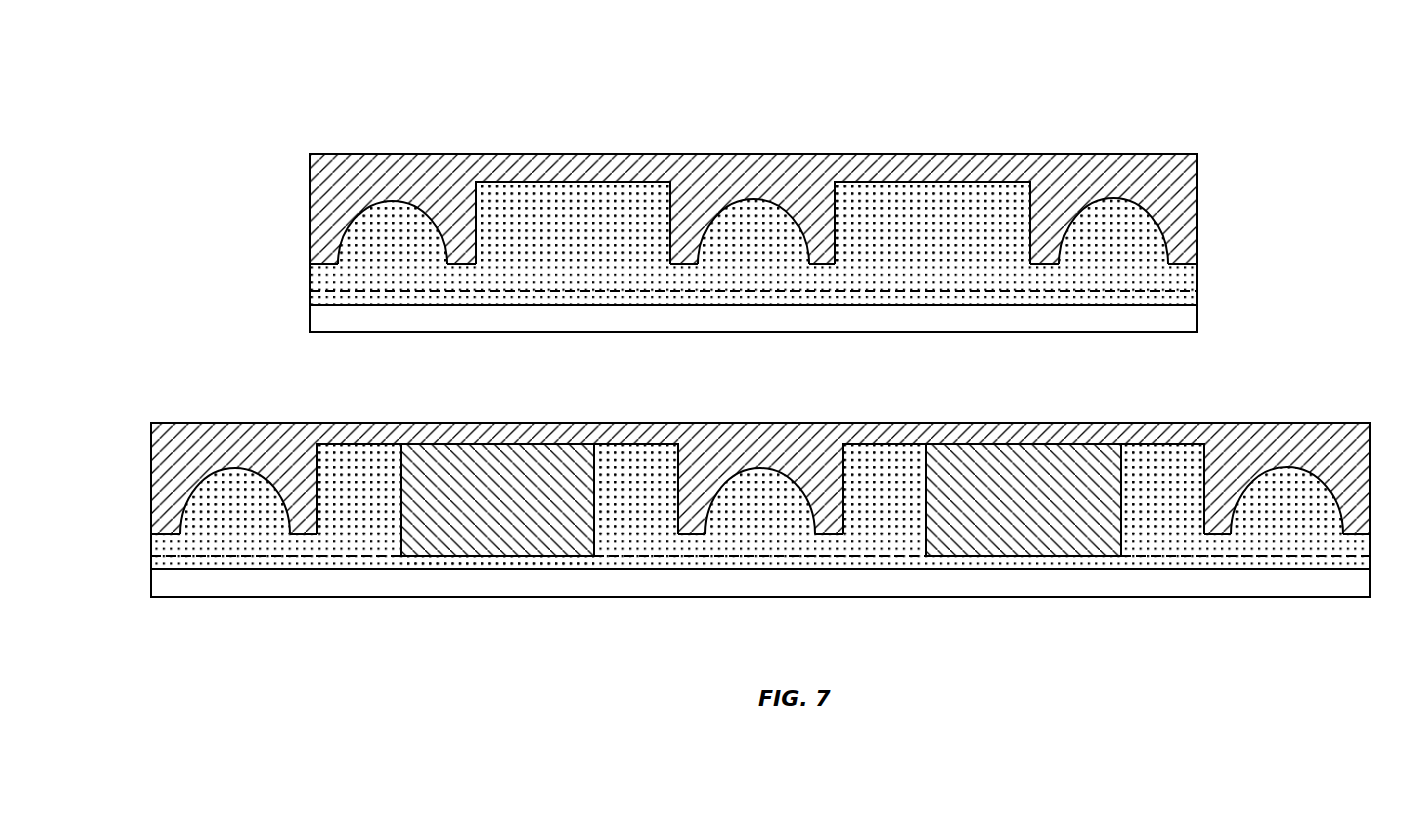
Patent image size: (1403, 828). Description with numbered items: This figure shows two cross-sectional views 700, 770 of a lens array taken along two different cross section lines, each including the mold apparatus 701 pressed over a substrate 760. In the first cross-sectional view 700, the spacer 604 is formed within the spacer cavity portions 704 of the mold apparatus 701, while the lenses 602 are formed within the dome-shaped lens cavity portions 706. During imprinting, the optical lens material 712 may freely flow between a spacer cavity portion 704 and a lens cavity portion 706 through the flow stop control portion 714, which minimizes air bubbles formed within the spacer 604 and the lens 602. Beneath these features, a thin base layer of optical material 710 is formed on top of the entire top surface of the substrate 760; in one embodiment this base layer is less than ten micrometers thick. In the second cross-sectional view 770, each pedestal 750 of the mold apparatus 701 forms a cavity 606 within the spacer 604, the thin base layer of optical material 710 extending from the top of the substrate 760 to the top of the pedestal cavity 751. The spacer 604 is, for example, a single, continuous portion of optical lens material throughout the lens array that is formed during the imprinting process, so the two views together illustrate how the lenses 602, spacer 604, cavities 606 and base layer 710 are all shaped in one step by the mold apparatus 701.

The cross-sectional view 700 is at (444, 103).
The cross-sectional view 770 is at (128, 404).
The mold apparatus 701 is at (1071, 154).
The spacer cavity portion 704 is at (539, 174).
The lens cavity portion 706 is at (746, 195).
The thin base layer of optical material 710 is at (318, 298).
The optical lens material 712 is at (1145, 272).
The flow stop control portion 714 is at (674, 275).
The lens 602 is at (770, 249).
The spacer 604 is at (592, 236).
The substrate 760 is at (771, 329).
The pedestal 750 is at (515, 511).
The pedestal cavity 751 is at (505, 557).
The cavity 606 is at (443, 565).